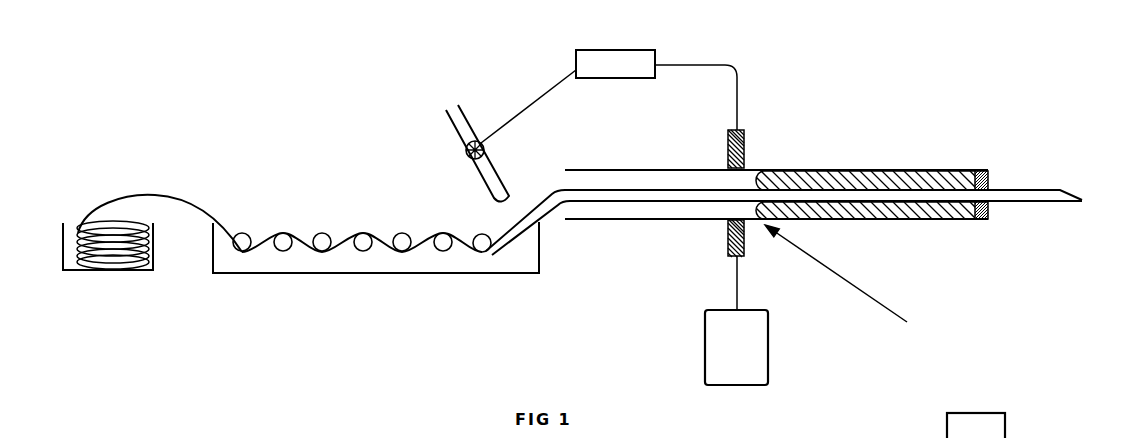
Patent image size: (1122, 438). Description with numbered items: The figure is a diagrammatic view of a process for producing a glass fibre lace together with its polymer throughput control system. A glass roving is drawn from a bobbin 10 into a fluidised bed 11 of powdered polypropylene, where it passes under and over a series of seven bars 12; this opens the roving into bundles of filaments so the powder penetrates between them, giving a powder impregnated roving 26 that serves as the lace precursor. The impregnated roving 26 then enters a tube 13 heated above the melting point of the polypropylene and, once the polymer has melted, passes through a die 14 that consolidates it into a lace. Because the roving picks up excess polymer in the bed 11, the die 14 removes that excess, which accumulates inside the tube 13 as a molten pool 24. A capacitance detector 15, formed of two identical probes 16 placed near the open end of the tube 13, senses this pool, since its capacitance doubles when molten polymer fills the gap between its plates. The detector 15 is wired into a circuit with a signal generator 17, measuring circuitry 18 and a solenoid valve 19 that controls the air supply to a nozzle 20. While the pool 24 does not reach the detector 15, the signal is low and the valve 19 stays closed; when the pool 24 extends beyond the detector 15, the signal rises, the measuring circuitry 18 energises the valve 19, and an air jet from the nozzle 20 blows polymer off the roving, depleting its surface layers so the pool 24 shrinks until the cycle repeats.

The bobbin 10 is at (103, 272).
The fluidised bed 11 is at (343, 227).
The bars 12 is at (283, 242).
The tube 13 is at (855, 168).
The die 14 is at (990, 178).
The capacitance detector 15 is at (850, 284).
The probes 16 is at (745, 150).
The signal generator 17 is at (743, 355).
The measuring circuitry 18 is at (642, 62).
The solenoid valve 19 is at (470, 147).
The nozzle 20 is at (493, 188).
The molten pool 24 is at (915, 183).
The powder impregnated roving 26 is at (547, 210).